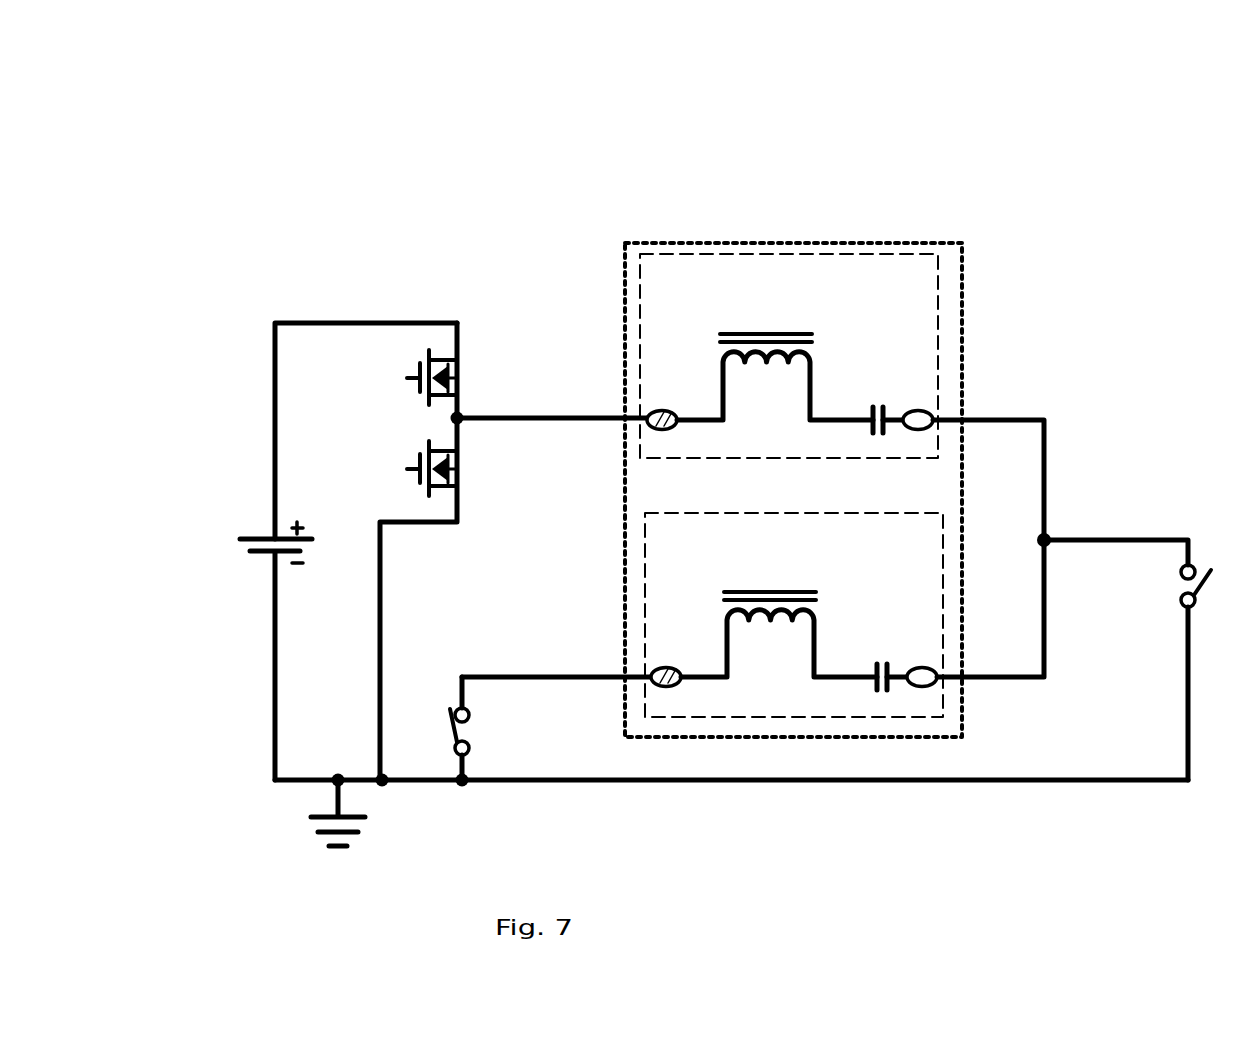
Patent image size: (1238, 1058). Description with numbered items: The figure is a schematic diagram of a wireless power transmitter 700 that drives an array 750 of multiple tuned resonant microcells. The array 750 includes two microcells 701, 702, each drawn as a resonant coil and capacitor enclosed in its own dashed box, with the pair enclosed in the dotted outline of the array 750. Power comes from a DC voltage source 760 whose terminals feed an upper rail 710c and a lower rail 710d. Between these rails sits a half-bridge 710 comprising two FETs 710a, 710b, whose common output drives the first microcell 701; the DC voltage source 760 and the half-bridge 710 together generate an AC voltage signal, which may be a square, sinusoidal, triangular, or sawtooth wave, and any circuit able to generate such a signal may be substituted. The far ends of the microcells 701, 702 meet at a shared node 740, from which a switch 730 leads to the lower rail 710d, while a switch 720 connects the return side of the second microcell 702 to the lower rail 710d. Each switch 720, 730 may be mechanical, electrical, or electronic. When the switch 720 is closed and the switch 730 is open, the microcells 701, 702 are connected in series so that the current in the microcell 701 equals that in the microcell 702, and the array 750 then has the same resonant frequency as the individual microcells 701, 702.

The wireless power transmitter 700 is at (252, 90).
The microcell 701 is at (810, 257).
The microcell 702 is at (753, 715).
The half-bridge 710 is at (438, 313).
The FET 710a is at (465, 385).
The FET 710b is at (465, 460).
The upper rail 710c is at (270, 410).
The lower rail 710d is at (270, 635).
The switch 720 is at (478, 732).
The switch 730 is at (1172, 600).
The shared node 740 is at (1042, 540).
The array 750 is at (960, 242).
The DC voltage source 760 is at (250, 549).